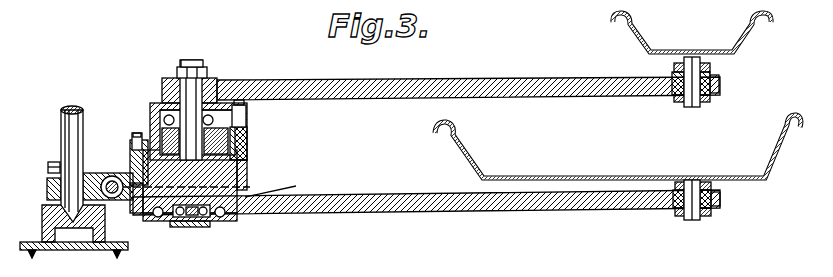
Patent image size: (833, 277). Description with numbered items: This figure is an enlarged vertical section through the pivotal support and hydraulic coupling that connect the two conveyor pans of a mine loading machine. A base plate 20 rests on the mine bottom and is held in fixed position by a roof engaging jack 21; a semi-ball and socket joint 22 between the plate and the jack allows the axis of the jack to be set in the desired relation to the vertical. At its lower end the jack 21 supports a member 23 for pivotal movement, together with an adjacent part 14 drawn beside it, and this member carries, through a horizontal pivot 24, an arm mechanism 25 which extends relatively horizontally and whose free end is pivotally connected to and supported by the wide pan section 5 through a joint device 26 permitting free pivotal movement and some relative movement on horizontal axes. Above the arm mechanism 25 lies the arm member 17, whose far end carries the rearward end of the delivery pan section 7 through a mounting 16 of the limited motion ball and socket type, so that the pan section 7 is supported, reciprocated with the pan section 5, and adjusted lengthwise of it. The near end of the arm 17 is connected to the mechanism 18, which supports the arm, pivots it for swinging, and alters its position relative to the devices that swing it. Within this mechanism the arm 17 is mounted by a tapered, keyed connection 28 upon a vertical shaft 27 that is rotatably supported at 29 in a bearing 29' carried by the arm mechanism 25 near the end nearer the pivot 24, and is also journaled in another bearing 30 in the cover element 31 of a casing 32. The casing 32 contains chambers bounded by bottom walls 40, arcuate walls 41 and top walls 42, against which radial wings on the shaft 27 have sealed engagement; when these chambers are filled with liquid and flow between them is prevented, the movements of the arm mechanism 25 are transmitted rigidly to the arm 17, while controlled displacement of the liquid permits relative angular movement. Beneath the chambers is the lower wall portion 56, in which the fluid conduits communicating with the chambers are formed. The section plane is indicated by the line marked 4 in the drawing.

The pan section 5 is at (470, 163).
The delivery pan section 7 is at (644, 42).
The bearing housing 14 is at (47, 178).
The mounting 16 is at (714, 82).
The arm member 17 is at (500, 80).
The mechanism 18 is at (148, 126).
The base plate 20 is at (103, 248).
The roof engaging jack 21 is at (61, 126).
The semi-ball and socket joint 22 is at (53, 248).
The member 23 is at (47, 190).
The horizontal pivot 24 is at (113, 180).
The arm mechanism 25 is at (431, 214).
The joint device 26 is at (712, 207).
The vertical shaft 27 is at (206, 104).
The tapered, keyed connection 28 is at (180, 78).
The rotatable support 29 is at (189, 230).
The bearing 29' is at (197, 238).
The bearing 30 is at (160, 106).
The cover element 31 is at (240, 91).
The casing 32 is at (245, 168).
The bottom walls 40 is at (280, 186).
The arcuate walls 41 is at (248, 148).
The top walls 42 is at (244, 127).
The lower wall portion 56 is at (238, 216).
The section line 4- 4 is at (98, 178).